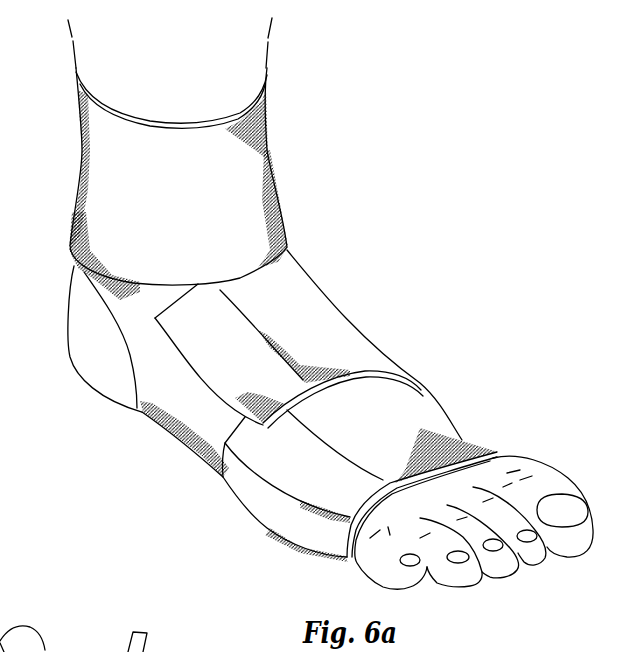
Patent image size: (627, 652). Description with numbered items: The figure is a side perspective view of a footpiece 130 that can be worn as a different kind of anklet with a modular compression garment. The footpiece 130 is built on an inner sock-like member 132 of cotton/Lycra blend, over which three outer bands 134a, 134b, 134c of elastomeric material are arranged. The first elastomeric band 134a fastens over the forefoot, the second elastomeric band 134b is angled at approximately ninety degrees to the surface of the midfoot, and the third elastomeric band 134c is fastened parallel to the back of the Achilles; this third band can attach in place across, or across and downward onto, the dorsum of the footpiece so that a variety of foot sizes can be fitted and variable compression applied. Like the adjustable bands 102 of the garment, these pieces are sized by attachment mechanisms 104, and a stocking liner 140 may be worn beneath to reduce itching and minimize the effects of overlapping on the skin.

The band 102 is at (272, 146).
The attachment mechanism 104 is at (203, 373).
The footpiece 130 is at (439, 325).
The inner sock-like member 132 is at (190, 443).
The first elastomeric band 134a is at (460, 434).
The second elastomeric band 134b is at (330, 304).
The third elastomeric band 134c is at (82, 178).
The stocking liner 140 is at (500, 459).